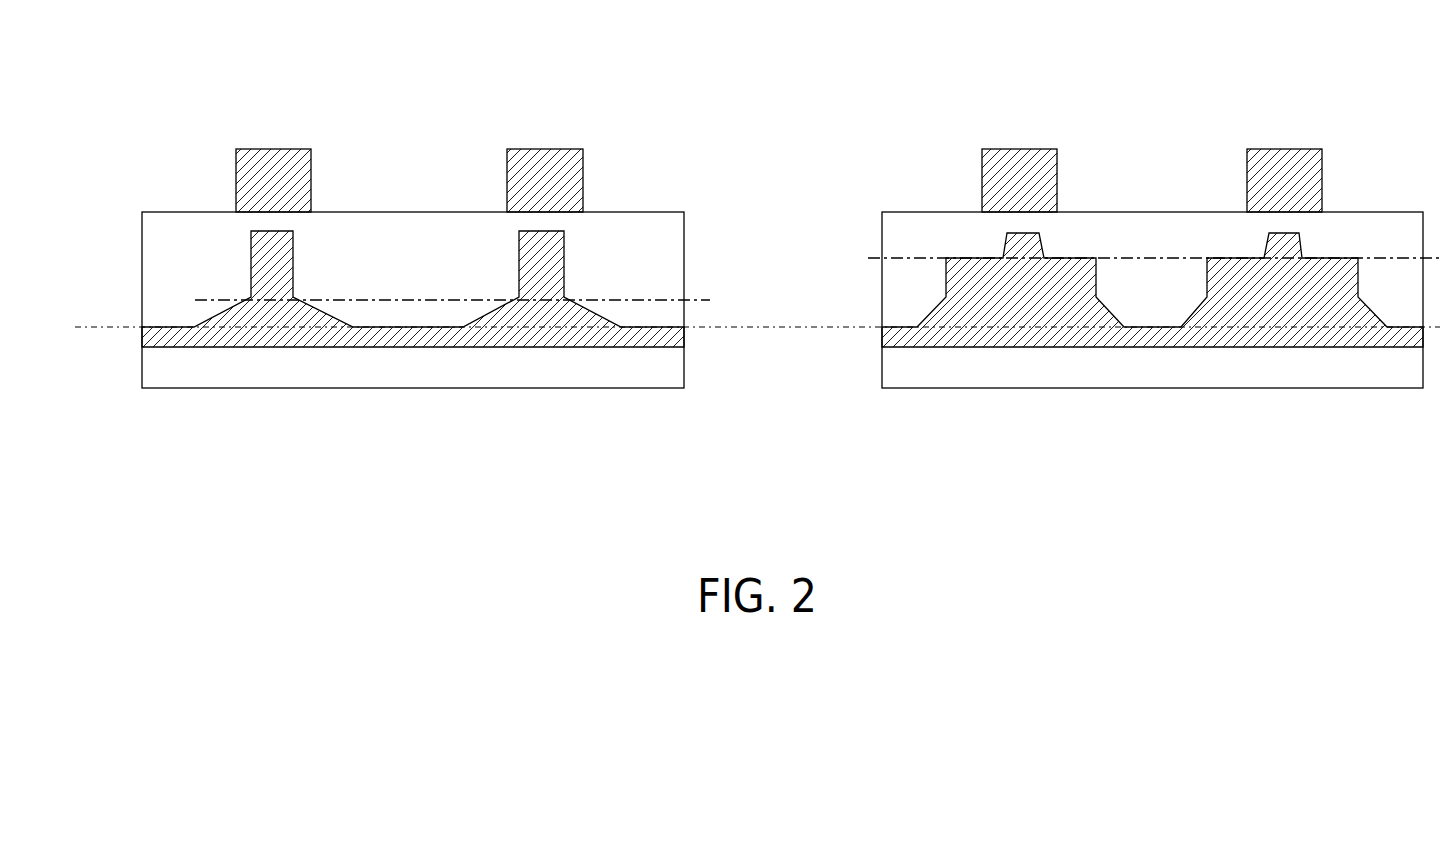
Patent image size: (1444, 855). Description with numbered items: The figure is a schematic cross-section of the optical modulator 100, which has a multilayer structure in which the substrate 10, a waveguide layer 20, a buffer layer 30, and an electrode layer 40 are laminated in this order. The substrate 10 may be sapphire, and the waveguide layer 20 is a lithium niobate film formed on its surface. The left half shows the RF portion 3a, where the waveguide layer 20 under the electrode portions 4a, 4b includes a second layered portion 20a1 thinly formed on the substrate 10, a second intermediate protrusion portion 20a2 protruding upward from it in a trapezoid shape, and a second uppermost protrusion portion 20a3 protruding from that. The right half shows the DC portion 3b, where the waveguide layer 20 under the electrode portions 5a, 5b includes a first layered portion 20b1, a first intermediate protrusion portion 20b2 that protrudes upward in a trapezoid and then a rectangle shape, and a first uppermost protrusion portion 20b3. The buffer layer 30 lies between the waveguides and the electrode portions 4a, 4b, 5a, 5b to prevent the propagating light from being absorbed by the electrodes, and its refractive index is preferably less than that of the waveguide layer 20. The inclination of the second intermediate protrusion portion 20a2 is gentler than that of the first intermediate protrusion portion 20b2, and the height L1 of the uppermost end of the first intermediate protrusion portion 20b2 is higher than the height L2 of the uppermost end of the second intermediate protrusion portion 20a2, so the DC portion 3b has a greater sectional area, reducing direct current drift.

The optical modulator 100 is at (115, 32).
The substrate 10 is at (653, 373).
The waveguide layer 20 is at (645, 337).
The second layered portion 20a1 is at (168, 340).
The second intermediate protrusion portion 20a2 is at (253, 313).
The second uppermost protrusion portion 20a3 is at (271, 271).
The first layered portion 20b1 is at (918, 330).
The first intermediate protrusion portion 20b2 is at (1012, 297).
The first uppermost protrusion portion 20b3 is at (1020, 248).
The buffer layer 30 is at (635, 260).
The electrode layer 40 is at (626, 183).
The electrode portion 4a is at (271, 149).
The electrode portion 4b is at (544, 149).
The electrode portion 5a is at (1020, 149).
The electrode portion 5b is at (1283, 149).
The RF portion 3a is at (413, 199).
The DC portion 3b is at (1143, 190).
The height of the uppermost end of the first intermediate protrusion portion L1 is at (1154, 244).
The height of the uppermost end of the second intermediate protrusion portion L2 is at (466, 301).